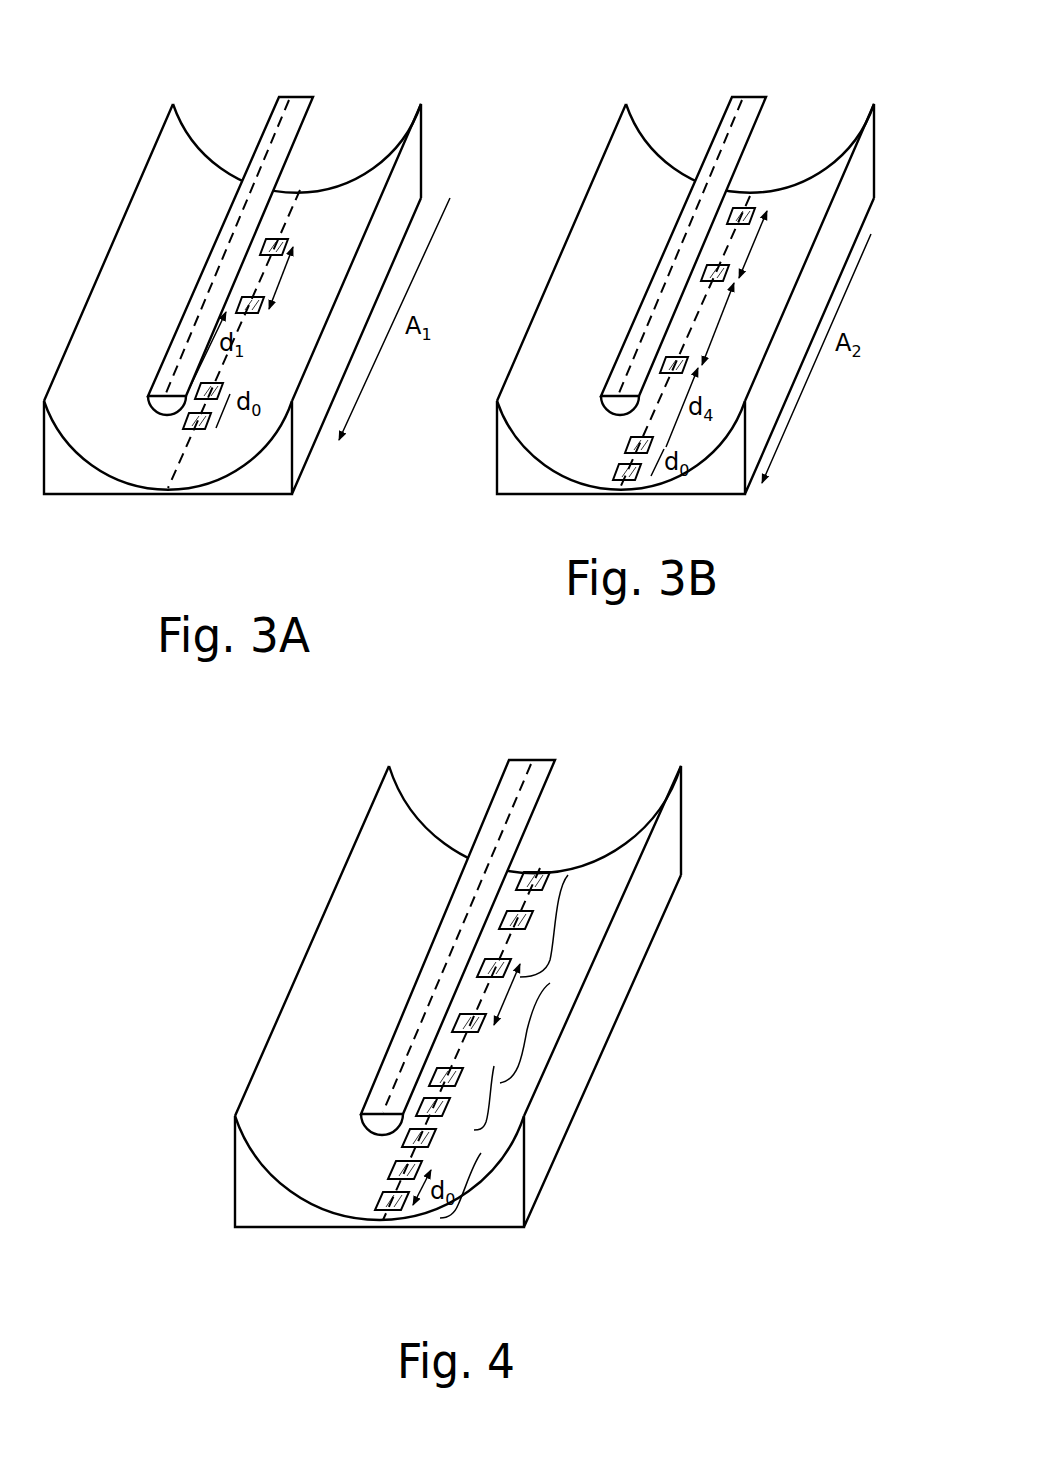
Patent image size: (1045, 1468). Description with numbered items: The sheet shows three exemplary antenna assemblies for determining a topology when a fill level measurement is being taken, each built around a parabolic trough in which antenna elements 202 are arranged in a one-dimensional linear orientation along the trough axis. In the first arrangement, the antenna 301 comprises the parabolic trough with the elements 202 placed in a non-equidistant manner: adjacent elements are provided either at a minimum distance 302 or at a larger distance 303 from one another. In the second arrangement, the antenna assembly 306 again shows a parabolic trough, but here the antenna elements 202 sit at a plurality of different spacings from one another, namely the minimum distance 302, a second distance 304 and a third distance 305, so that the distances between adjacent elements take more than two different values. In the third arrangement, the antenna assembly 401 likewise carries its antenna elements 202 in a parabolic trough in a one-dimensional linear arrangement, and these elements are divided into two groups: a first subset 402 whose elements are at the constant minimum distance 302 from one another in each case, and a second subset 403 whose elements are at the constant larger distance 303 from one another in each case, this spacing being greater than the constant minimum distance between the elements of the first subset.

In FIG. 3A, the antenna elements 202 is at (281, 240).
In FIG. 3B, the antenna elements 202 is at (627, 443).
In FIG. 4, the antenna elements 202 is at (403, 1133).
In FIG. 3A, the antenna 301 is at (432, 128).
In FIG. 3A, the minimum distance d0 302 is at (229, 398).
In FIG. 3B, the minimum distance d0 302 is at (689, 455).
In FIG. 4, the minimum distance d0 302 is at (425, 1201).
In FIG. 3A, the larger distance d1 303 is at (296, 252).
In FIG. 4, the larger distance d1 303 is at (543, 872).
In FIG. 3B, the distance d2 304 is at (769, 228).
In FIG. 3B, the distance d3 305 is at (733, 286).
In FIG. 3B, the antenna assembly 306 is at (883, 148).
In FIG. 4, the antenna assembly 401 is at (683, 824).
In FIG. 4, the first subset M1 402 is at (481, 1153).
In FIG. 4, the second subset M2 403 is at (553, 988).